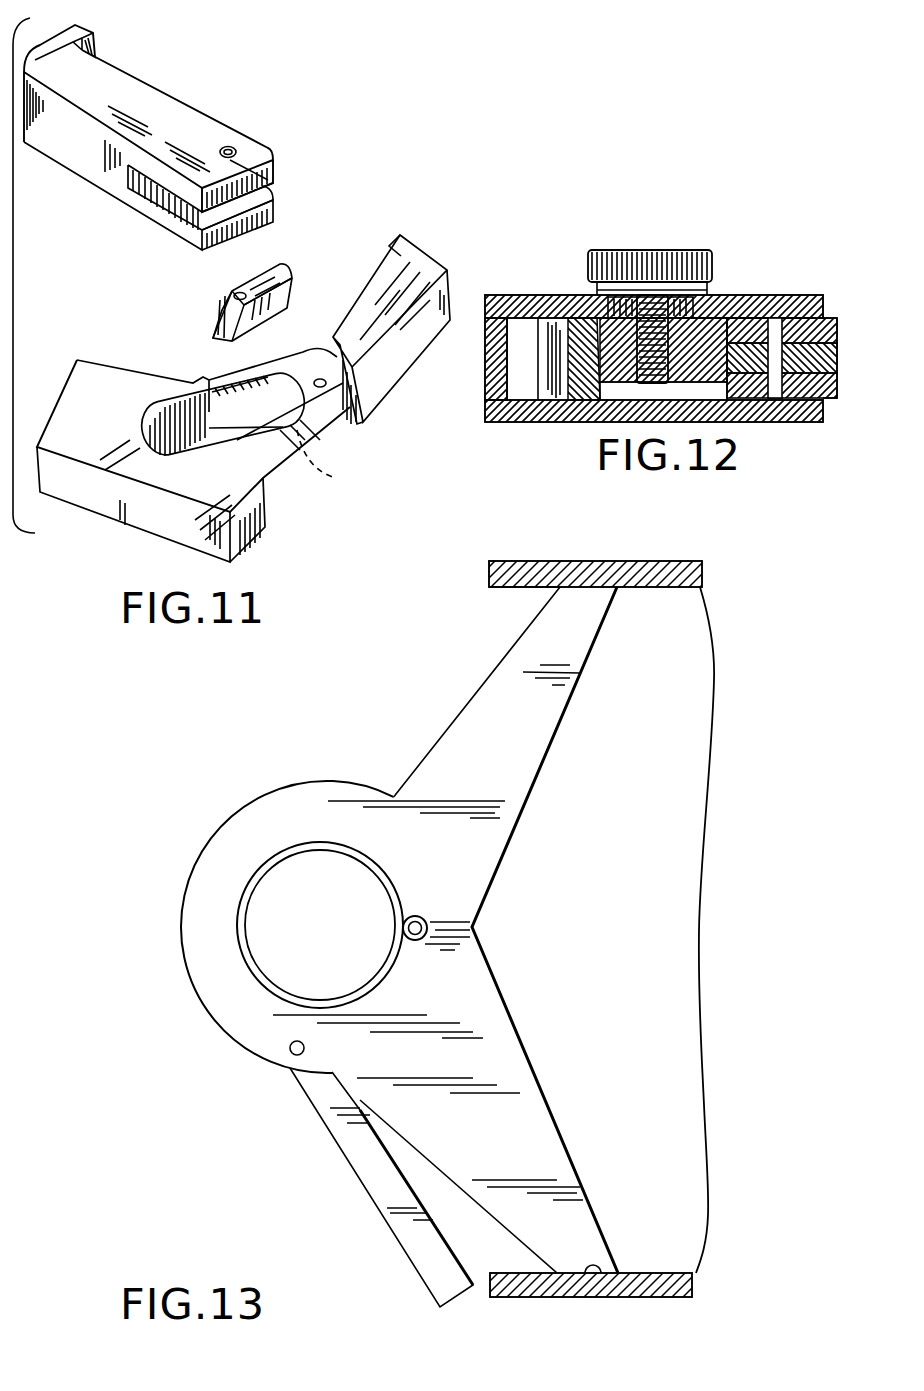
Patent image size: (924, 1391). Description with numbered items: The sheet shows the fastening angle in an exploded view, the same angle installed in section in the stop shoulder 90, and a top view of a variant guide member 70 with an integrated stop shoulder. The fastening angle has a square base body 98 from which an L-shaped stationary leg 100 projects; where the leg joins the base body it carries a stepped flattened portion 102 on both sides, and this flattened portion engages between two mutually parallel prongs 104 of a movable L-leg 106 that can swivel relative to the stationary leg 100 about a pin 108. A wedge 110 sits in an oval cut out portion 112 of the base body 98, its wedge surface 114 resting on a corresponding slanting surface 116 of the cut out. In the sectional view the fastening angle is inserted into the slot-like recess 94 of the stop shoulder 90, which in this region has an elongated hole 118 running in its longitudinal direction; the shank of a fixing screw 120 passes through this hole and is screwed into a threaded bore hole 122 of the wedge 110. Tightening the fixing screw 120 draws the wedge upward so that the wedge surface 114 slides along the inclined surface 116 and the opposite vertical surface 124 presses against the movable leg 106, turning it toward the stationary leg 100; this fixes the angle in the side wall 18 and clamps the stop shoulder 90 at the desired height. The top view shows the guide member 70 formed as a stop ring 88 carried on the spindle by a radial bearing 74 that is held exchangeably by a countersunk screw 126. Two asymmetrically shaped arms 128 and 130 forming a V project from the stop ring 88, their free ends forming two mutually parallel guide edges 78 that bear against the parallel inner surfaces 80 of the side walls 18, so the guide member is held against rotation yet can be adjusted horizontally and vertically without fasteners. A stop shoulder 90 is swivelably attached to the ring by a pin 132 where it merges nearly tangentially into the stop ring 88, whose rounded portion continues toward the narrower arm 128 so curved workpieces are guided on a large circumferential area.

In FIG. 13, the side wall 18 is at (701, 565).
In FIG. 13, the guide member 70 is at (352, 743).
In FIG. 13, the radial ball bearing 74 is at (245, 946).
In FIG. 13, the guide edges 78 is at (594, 1290).
In FIG. 13, the inner surfaces 80 is at (510, 590).
In FIG. 13, the stop ring 88 is at (217, 841).
In FIG. 12, the stop shoulder 90 is at (536, 295).
In FIG. 13, the stop shoulder 90 is at (368, 1163).
In FIG. 12, the slot-like recess 94 is at (497, 418).
In FIG. 11, the base body 98 is at (120, 513).
In FIG. 12, the base body 98 is at (545, 402).
In FIG. 11, the L-shaped leg 100 is at (408, 344).
In FIG. 12, the L-shaped leg 100 is at (790, 421).
In FIG. 11, the stepped flattened portion 102 is at (333, 477).
In FIG. 11, the prongs 104 is at (270, 198).
In FIG. 12, the prongs 104 is at (840, 332).
In FIG. 11, the movable L-leg 106 is at (92, 167).
In FIG. 12, the pin 108 is at (776, 336).
In FIG. 11, the wedge 110 is at (277, 264).
In FIG. 12, the wedge 110 is at (737, 396).
In FIG. 11, the oval cut out portion 112 is at (265, 402).
In FIG. 11, the wedge surface 114 is at (214, 330).
In FIG. 12, the slanting surface 116 is at (592, 402).
In FIG. 12, the elongated hole 118 is at (608, 303).
In FIG. 12, the fixing screw 120 is at (627, 258).
In FIG. 11, the threaded bore hole 122 is at (233, 294).
In FIG. 11, the vertical surface 124 is at (293, 290).
In FIG. 13, the countersunk screw 126 is at (473, 926).
In FIG. 13, the narrower arm 128 is at (492, 674).
In FIG. 13, the arm 130 is at (507, 1057).
In FIG. 13, the pin 132 is at (291, 1054).